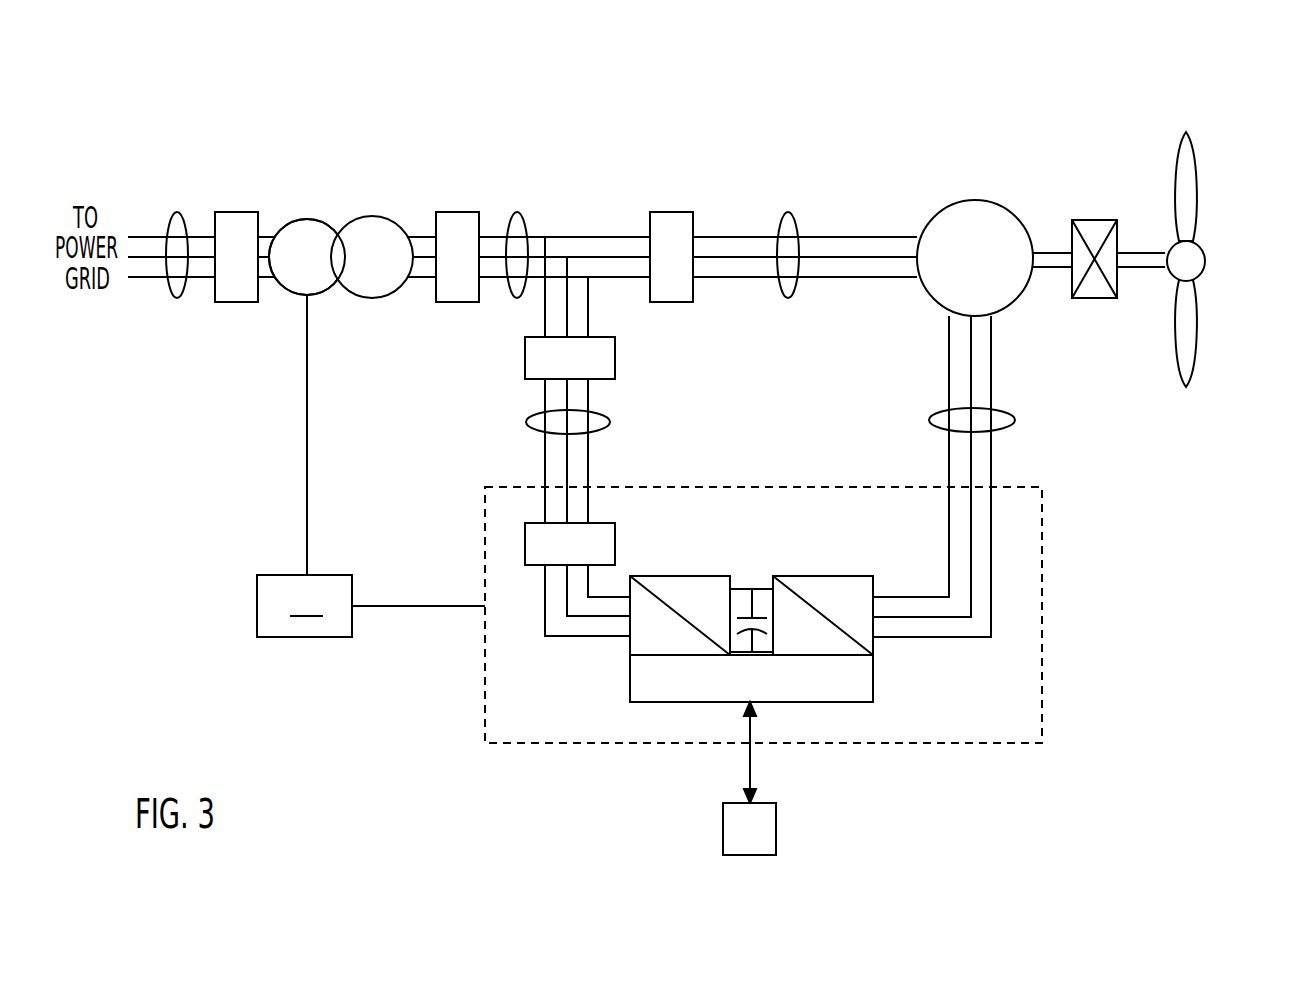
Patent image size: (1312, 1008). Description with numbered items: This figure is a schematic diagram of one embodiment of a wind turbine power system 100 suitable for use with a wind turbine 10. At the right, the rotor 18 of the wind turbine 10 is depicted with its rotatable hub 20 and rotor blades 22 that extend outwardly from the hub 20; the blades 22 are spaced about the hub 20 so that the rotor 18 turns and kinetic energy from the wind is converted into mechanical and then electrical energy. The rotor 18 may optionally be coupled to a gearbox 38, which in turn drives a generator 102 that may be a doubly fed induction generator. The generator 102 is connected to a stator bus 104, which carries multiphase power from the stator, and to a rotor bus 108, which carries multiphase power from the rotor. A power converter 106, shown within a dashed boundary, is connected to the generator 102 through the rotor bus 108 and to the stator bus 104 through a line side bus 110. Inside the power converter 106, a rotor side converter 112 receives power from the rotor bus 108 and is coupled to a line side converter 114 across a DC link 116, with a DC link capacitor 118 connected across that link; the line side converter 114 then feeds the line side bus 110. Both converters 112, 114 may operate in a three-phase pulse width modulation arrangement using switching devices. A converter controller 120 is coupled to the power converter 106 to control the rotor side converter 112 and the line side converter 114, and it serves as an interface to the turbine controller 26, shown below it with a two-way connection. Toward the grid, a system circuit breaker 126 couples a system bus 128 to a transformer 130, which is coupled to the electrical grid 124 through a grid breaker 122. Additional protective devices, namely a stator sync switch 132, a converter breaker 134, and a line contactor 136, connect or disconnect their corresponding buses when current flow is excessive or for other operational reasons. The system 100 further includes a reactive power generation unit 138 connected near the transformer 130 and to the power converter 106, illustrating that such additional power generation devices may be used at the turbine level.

The wind turbine 10 is at (1198, 128).
The rotor 18 is at (1212, 290).
The hub 20 is at (1222, 265).
The rotor blade 22 is at (1188, 200).
The turbine controller 26 is at (776, 833).
The gearbox 38 is at (1095, 220).
The wind turbine power system 100 is at (425, 650).
The generator 102 is at (976, 200).
The stator bus 104 is at (788, 212).
The power converter 106 is at (764, 652).
The rotor bus 108 is at (1015, 420).
The line side bus 110 is at (525, 420).
The rotor side converter 112 is at (880, 650).
The line side converter 114 is at (630, 652).
The DC link 116 is at (762, 585).
The DC link capacitor 118 is at (745, 598).
The converter controller 120 is at (663, 702).
The grid breaker 122 is at (240, 212).
The electrical grid 124 is at (177, 212).
The system circuit breaker 126 is at (461, 212).
The system bus 128 is at (517, 212).
The transformer 130 is at (372, 216).
The stator sync switch 132 is at (678, 212).
The converter breaker 134 is at (525, 358).
The line contactor 136 is at (525, 548).
The reactive power generation unit 138 is at (304, 606).